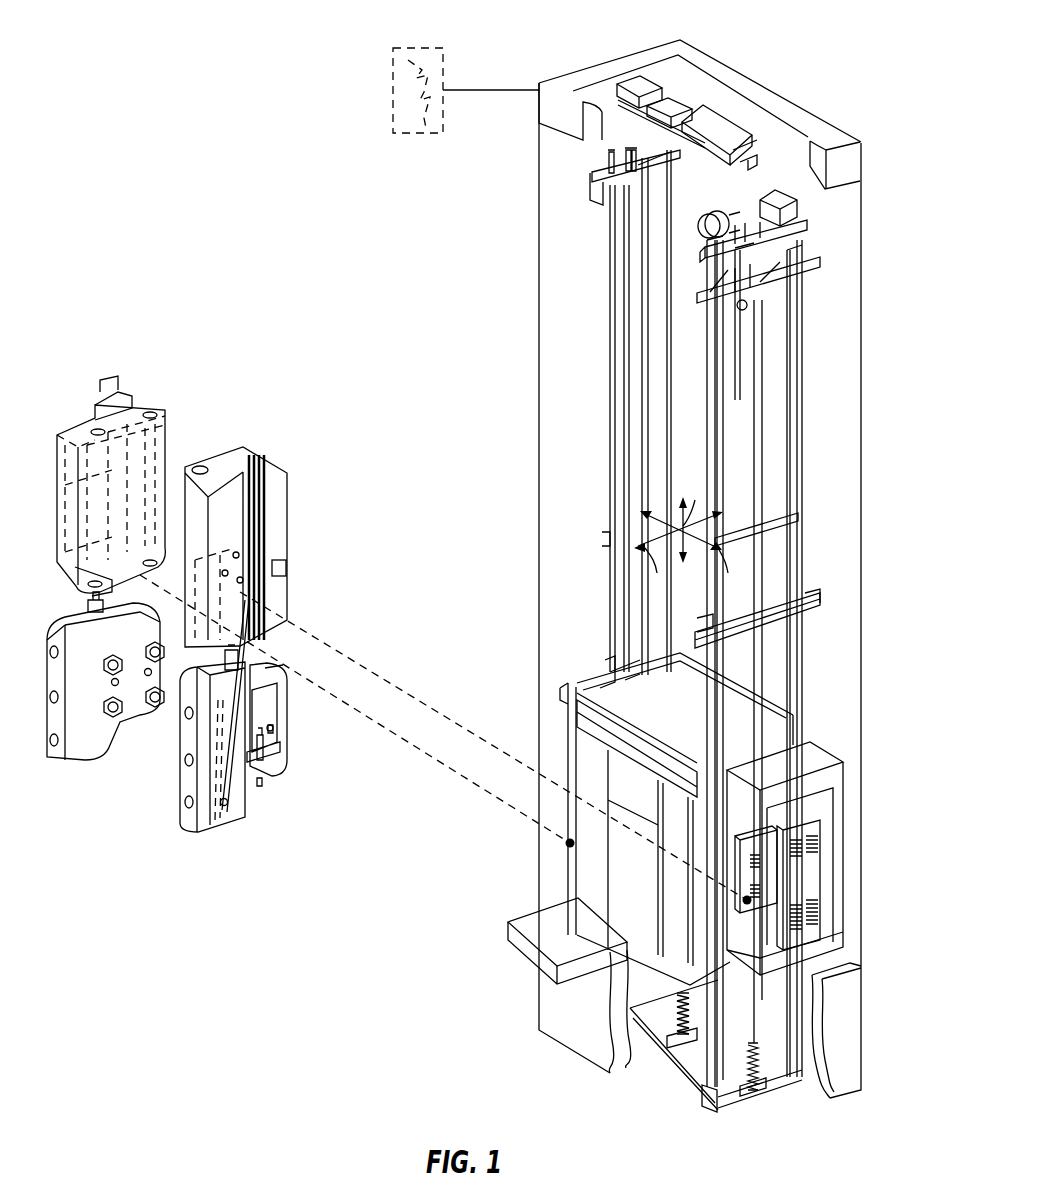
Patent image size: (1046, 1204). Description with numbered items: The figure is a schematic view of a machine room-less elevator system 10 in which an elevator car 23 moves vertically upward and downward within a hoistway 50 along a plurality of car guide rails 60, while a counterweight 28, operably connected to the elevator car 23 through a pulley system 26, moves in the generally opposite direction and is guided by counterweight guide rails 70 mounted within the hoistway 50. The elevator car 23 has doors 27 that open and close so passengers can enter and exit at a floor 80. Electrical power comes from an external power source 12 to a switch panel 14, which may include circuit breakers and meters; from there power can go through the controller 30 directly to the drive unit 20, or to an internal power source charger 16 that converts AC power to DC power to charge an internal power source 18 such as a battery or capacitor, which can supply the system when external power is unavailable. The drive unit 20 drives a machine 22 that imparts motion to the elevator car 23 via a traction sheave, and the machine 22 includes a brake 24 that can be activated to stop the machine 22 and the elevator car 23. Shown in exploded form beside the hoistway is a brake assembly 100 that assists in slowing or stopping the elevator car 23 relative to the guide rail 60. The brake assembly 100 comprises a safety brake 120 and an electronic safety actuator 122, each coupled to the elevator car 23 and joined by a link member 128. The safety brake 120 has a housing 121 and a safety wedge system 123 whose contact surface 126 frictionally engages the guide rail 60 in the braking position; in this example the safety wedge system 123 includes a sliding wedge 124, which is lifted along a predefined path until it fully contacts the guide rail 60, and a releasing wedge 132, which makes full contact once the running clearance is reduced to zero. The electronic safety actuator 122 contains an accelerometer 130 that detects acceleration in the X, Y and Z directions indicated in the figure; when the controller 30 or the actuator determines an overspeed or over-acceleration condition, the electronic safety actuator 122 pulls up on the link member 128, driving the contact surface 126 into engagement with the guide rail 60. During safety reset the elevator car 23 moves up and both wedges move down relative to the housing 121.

The elevator system 10 is at (150, 202).
The power source 12 is at (393, 88).
The switch panel 14 is at (643, 82).
The internal power source charger 16 is at (605, 113).
The internal power source 18 is at (730, 130).
The drive unit 20 is at (772, 205).
The machine 22 is at (785, 213).
The brake 24 is at (710, 224).
The pulley system 26 is at (767, 284).
The counterweight 28 is at (715, 418).
The counterweight guide rails 70 is at (802, 543).
The car guide rails 60 is at (750, 660).
The elevator car 23 is at (755, 819).
The doors 27 is at (643, 902).
The controller 30 is at (815, 880).
The hoistway 50 is at (556, 228).
The floor 80 is at (557, 932).
The brake assembly 100 is at (375, 485).
The safety brake 120 is at (180, 813).
The housing 121 is at (187, 735).
The electronic safety actuator 122 is at (289, 547).
The safety wedge system 123 is at (318, 892).
The sliding wedge 124 is at (228, 818).
The contact surface 126 is at (243, 790).
The link member 128 is at (286, 695).
The accelerometer 130 is at (286, 568).
The releasing wedge 132 is at (272, 729).